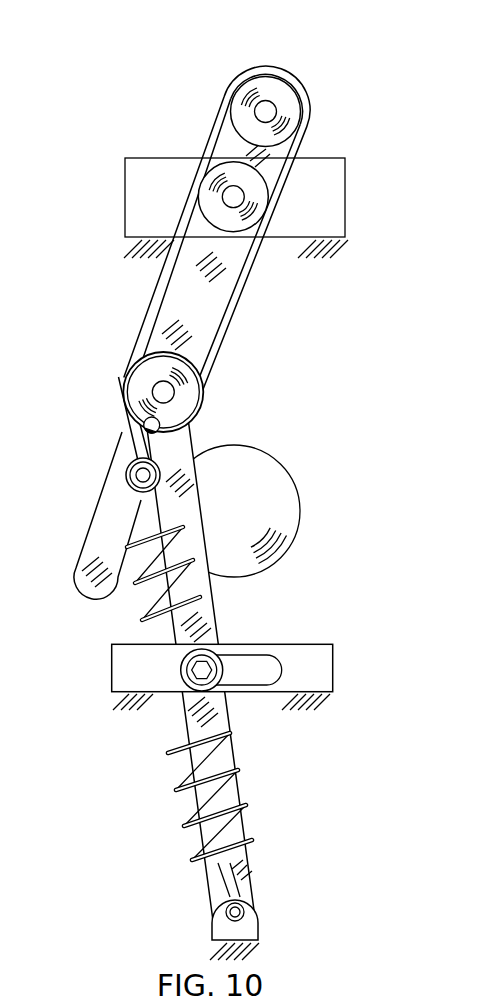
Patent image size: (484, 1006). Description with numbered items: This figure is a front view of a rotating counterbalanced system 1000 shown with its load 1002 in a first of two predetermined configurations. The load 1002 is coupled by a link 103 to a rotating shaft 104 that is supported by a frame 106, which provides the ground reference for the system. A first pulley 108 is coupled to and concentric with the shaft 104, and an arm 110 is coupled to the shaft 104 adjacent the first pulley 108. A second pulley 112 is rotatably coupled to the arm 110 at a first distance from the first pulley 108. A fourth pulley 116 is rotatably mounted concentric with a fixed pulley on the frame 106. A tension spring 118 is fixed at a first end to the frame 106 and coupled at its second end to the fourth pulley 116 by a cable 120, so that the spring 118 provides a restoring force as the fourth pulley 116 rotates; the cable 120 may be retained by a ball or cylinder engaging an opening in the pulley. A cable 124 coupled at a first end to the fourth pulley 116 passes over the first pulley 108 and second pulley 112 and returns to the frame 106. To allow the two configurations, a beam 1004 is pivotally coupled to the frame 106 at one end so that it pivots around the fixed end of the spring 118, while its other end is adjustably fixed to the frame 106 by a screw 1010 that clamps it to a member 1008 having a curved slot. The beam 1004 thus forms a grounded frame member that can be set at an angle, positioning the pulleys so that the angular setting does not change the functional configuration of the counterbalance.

The rotating counterbalanced system 1000 is at (150, 74).
The link 103 is at (233, 271).
The rotating shaft 104 is at (243, 186).
The frame 106 is at (125, 245).
The first pulley 108 is at (198, 190).
The arm 110 is at (228, 147).
The second pulley 112 is at (280, 76).
The fourth pulley 116 is at (124, 392).
The spring 118 is at (125, 537).
The cable 120 is at (122, 437).
The cable 124 is at (232, 345).
The load 1002 is at (300, 512).
The beam 1004 is at (237, 750).
The member with curved slot 1008 is at (330, 644).
The screw 1010 is at (212, 644).